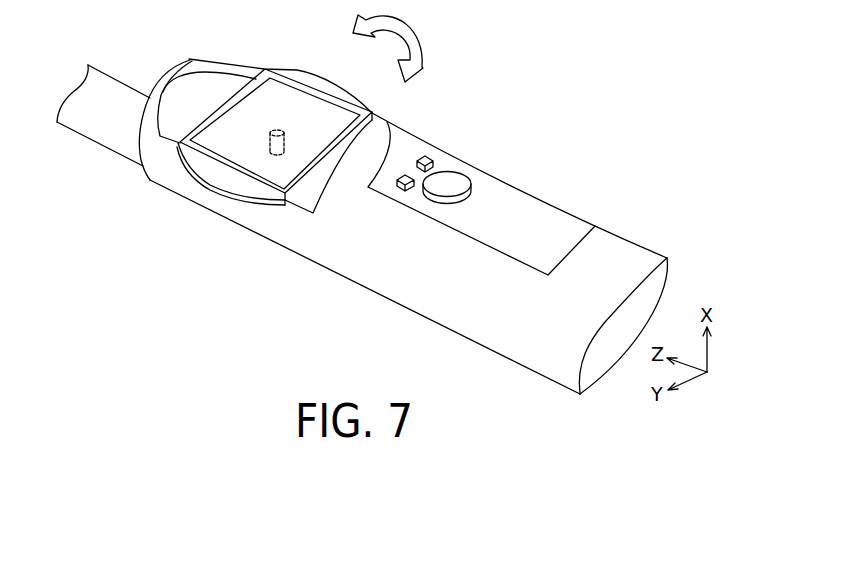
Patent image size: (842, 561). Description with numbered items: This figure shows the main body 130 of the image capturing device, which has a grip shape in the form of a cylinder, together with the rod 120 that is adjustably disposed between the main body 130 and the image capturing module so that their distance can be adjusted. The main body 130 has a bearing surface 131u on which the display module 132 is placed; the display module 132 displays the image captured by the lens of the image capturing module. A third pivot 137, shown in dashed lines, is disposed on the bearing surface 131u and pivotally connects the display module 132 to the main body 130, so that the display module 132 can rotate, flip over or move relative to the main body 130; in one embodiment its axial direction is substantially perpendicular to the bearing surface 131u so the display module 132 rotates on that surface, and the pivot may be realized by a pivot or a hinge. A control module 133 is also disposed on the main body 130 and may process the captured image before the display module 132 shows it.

The rod 120 is at (117, 76).
The main body 130 is at (603, 199).
The bearing surface 131u is at (207, 93).
The display module 132 is at (297, 82).
The control module 133 is at (450, 186).
The third pivot 137 is at (268, 145).